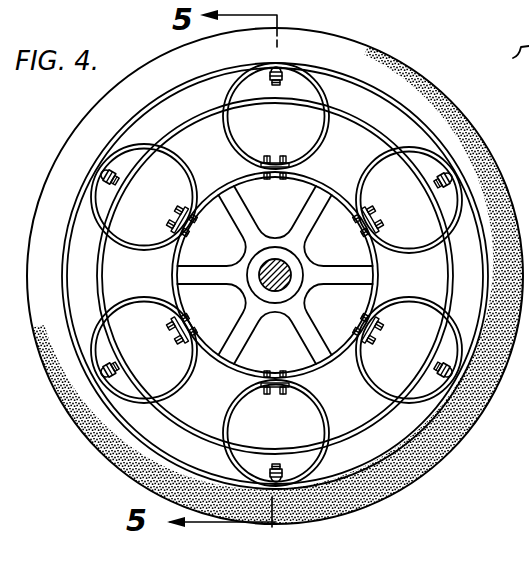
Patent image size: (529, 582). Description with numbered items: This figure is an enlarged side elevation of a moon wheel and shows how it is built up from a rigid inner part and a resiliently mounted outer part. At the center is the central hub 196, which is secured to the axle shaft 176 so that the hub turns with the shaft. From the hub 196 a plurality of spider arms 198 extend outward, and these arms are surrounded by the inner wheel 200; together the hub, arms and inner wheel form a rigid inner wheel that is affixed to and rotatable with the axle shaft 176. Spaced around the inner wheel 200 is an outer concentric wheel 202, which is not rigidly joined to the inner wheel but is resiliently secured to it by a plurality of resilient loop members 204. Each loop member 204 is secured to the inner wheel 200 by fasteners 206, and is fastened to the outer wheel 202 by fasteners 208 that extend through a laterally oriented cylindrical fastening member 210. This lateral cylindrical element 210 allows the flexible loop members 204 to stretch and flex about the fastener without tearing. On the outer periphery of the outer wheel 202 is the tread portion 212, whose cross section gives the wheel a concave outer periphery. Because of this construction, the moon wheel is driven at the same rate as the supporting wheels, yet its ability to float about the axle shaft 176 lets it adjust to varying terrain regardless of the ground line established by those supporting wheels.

The axle shaft 176 is at (259, 276).
The central hub 196 is at (276, 252).
The spider arms 198 is at (318, 209).
The inner wheel 200 is at (316, 178).
The outer concentric wheel 202 is at (382, 88).
The resilient loop members 204 is at (118, 234).
The fasteners 206 is at (180, 210).
The fasteners 208 is at (276, 86).
The laterally oriented cylindrical fastening member 210 is at (278, 68).
The tread portion 212 is at (378, 44).